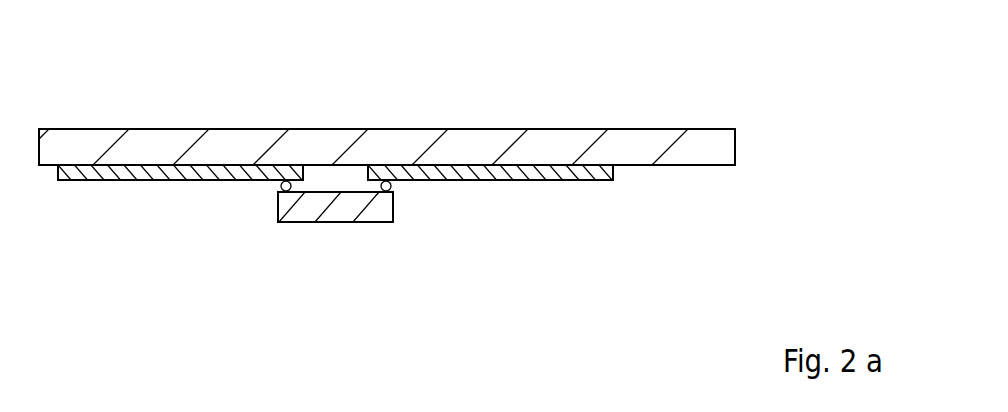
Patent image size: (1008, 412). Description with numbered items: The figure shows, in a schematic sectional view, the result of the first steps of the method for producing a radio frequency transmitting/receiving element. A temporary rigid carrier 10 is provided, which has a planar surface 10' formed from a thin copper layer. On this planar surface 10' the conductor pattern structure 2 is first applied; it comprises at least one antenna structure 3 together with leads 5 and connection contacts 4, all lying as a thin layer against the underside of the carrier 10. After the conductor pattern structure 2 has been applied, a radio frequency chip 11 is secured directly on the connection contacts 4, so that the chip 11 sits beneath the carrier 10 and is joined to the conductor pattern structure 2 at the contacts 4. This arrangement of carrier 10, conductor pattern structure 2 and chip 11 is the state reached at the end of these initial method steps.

The conductor pattern structure 2 is at (188, 192).
The antenna structure 3 is at (90, 173).
The connection contacts 4 is at (292, 168).
The leads 5 is at (240, 173).
The temporary rigid carrier 10 is at (374, 99).
The planar surface 10' is at (674, 223).
The radio frequency chip 11 is at (343, 212).